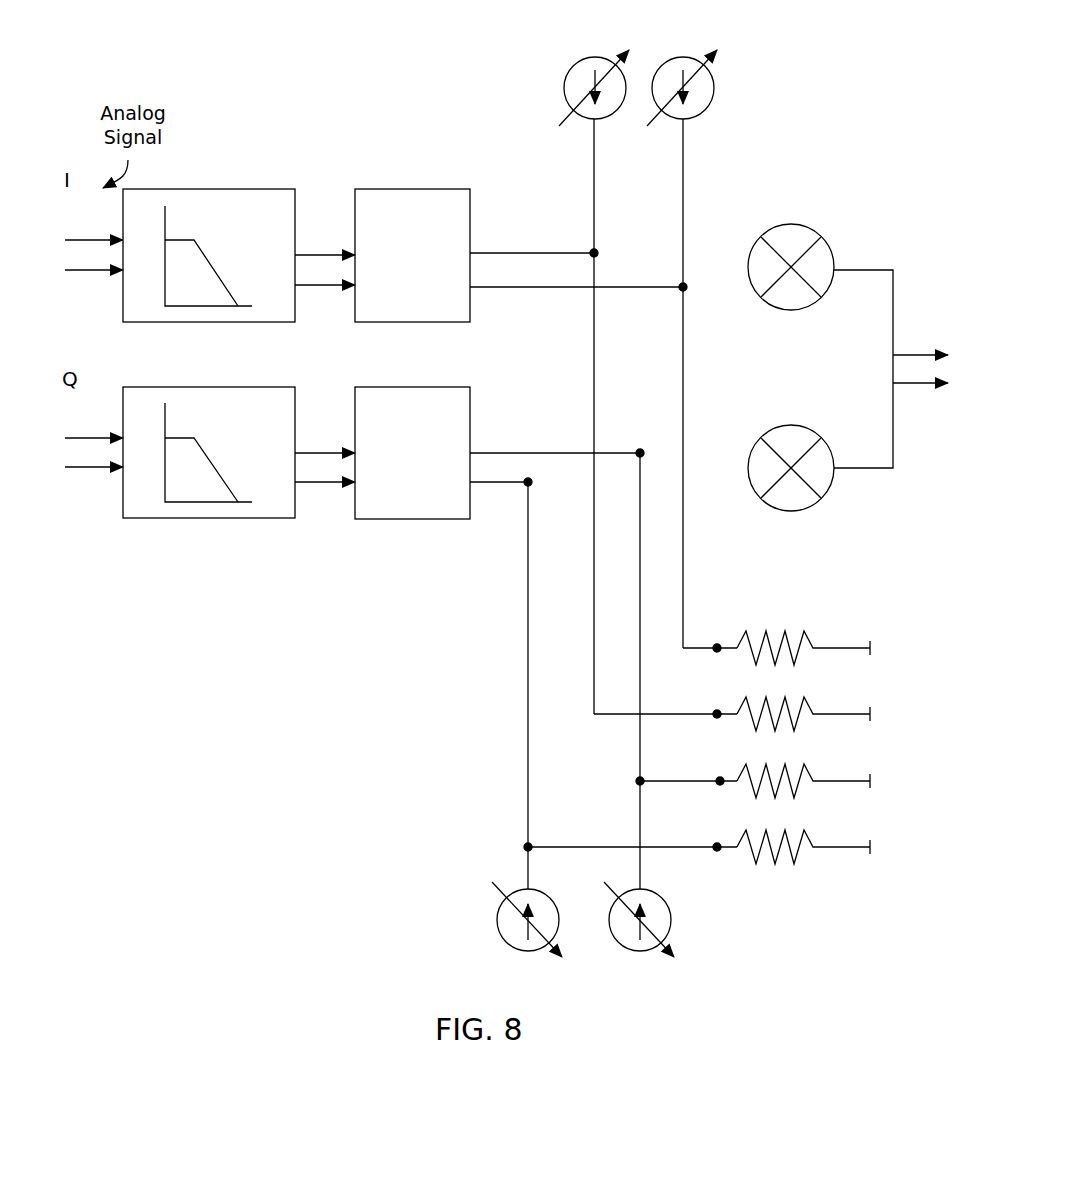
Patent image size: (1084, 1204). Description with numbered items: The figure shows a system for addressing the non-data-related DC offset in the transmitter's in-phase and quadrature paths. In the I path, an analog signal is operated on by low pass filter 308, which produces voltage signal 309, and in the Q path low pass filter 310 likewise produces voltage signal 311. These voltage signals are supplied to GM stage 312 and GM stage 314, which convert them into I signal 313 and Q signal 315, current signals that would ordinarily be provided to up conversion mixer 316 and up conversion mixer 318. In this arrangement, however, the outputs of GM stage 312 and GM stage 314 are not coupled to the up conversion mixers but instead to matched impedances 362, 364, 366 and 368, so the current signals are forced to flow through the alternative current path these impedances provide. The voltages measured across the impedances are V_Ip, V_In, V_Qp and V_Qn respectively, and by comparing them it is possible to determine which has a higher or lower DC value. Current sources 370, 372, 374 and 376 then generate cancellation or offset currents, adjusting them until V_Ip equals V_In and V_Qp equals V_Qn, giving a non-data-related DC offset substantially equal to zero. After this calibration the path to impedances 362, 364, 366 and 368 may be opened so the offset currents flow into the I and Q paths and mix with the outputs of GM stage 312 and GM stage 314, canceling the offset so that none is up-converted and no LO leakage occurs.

The low pass filter 308 is at (229, 211).
The voltage signal 309 is at (357, 190).
The low pass filter 310 is at (195, 498).
The voltage signal 311 is at (356, 539).
The GM stage 312 is at (412, 255).
The I signal 313 is at (567, 181).
The GM stage 314 is at (412, 453).
The Q signal 315 is at (557, 390).
The up conversion mixer 316 is at (812, 228).
The up conversion mixer 318 is at (800, 426).
The matched impedance 362 is at (800, 632).
The matched impedance 364 is at (812, 714).
The matched impedance 366 is at (813, 781).
The matched impedance 368 is at (812, 847).
The current source 370 is at (572, 70).
The current source 372 is at (660, 70).
The current source 374 is at (499, 935).
The current source 376 is at (671, 918).